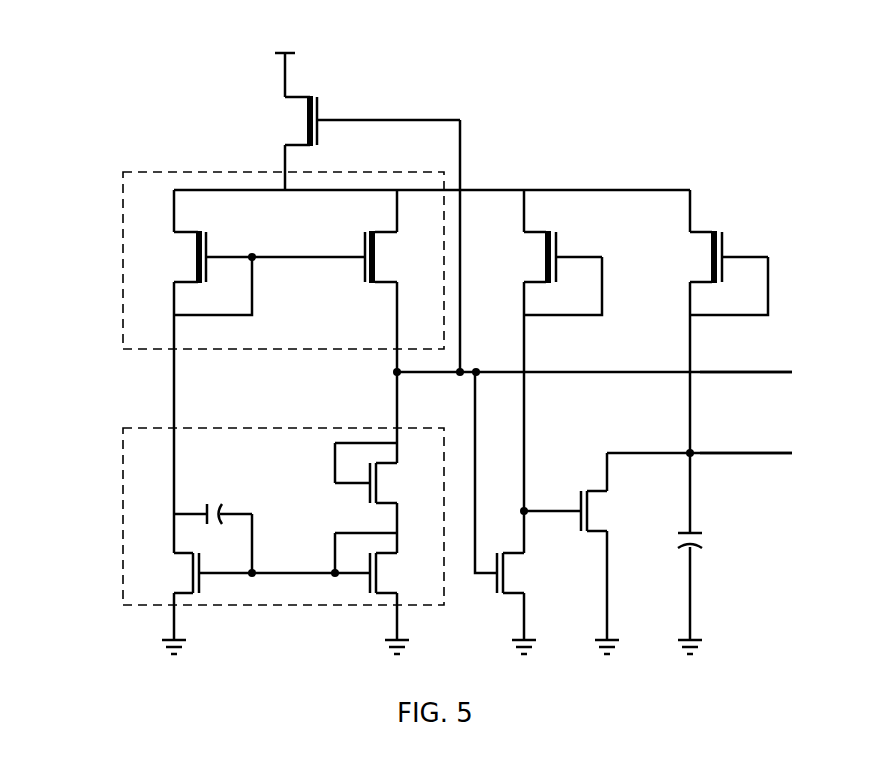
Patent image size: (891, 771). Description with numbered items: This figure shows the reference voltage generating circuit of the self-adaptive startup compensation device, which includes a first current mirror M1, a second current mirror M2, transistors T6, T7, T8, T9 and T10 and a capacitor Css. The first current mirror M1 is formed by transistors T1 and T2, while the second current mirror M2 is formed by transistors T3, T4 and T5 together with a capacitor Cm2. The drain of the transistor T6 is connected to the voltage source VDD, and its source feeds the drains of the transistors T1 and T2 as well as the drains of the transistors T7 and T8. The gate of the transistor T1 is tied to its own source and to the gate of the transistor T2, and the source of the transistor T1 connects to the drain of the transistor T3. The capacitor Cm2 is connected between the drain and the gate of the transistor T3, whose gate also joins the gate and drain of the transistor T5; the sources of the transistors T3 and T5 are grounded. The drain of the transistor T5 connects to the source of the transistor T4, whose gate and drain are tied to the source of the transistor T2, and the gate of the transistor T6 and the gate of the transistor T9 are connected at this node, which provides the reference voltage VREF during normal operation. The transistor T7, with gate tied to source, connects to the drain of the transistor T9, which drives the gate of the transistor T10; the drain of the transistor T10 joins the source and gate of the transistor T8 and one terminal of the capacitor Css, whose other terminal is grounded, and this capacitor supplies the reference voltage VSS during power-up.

The transistor T1 is at (172, 257).
The transistor T2 is at (399, 257).
The transistor T3 is at (169, 573).
The transistor T4 is at (402, 483).
The transistor T5 is at (402, 573).
The transistor T6 is at (281, 121).
The transistor T7 is at (522, 257).
The transistor T8 is at (688, 257).
The transistor T9 is at (528, 573).
The transistor T10 is at (621, 511).
The capacitor Cm2 is at (213, 524).
The capacitor Css is at (714, 541).
The first current mirror M1 is at (122, 261).
The second current mirror M2 is at (122, 516).
The voltage source VDD is at (286, 38).
The reference voltage VREF is at (782, 374).
The reference voltage VSS is at (774, 454).